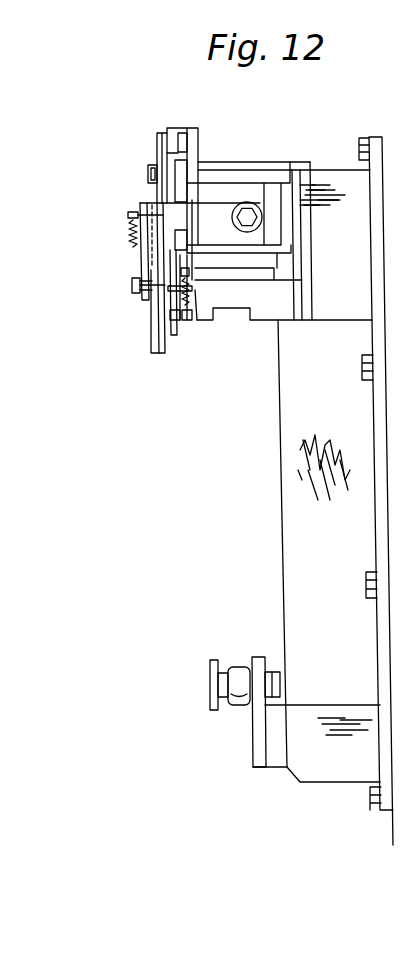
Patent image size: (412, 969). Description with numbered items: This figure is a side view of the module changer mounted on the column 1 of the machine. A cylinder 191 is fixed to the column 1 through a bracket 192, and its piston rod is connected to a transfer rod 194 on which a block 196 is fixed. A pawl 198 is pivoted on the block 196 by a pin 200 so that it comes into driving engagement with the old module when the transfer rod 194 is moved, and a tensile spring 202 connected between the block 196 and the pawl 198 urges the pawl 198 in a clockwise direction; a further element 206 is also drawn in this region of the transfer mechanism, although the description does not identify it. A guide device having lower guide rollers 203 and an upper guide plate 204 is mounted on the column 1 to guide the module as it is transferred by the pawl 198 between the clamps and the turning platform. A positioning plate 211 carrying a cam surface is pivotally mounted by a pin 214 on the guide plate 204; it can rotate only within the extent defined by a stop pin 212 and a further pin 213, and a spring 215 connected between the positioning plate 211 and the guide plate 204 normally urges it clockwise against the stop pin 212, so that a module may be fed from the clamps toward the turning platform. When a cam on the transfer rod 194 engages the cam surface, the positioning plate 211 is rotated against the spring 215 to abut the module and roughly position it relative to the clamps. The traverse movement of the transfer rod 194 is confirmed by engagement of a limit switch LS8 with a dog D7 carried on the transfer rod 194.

The column 1 is at (382, 133).
The cylinder 191 is at (248, 201).
The bracket 192 is at (298, 183).
The transfer rod 194 is at (152, 185).
The block 196 is at (160, 190).
The pawl 198 is at (178, 328).
The pin 200 is at (135, 284).
The tensile spring 202 is at (128, 215).
The lower guide roller 203 is at (238, 668).
The upper guide plate 204 is at (263, 312).
The spring 206 is at (130, 247).
The positioning plate 211 is at (161, 353).
The stop pin 212 is at (174, 335).
The pin 213 is at (170, 314).
The pin 214 is at (180, 310).
The spring 215 is at (205, 300).
The dog D7 is at (168, 200).
The limit switch LS8 is at (190, 128).